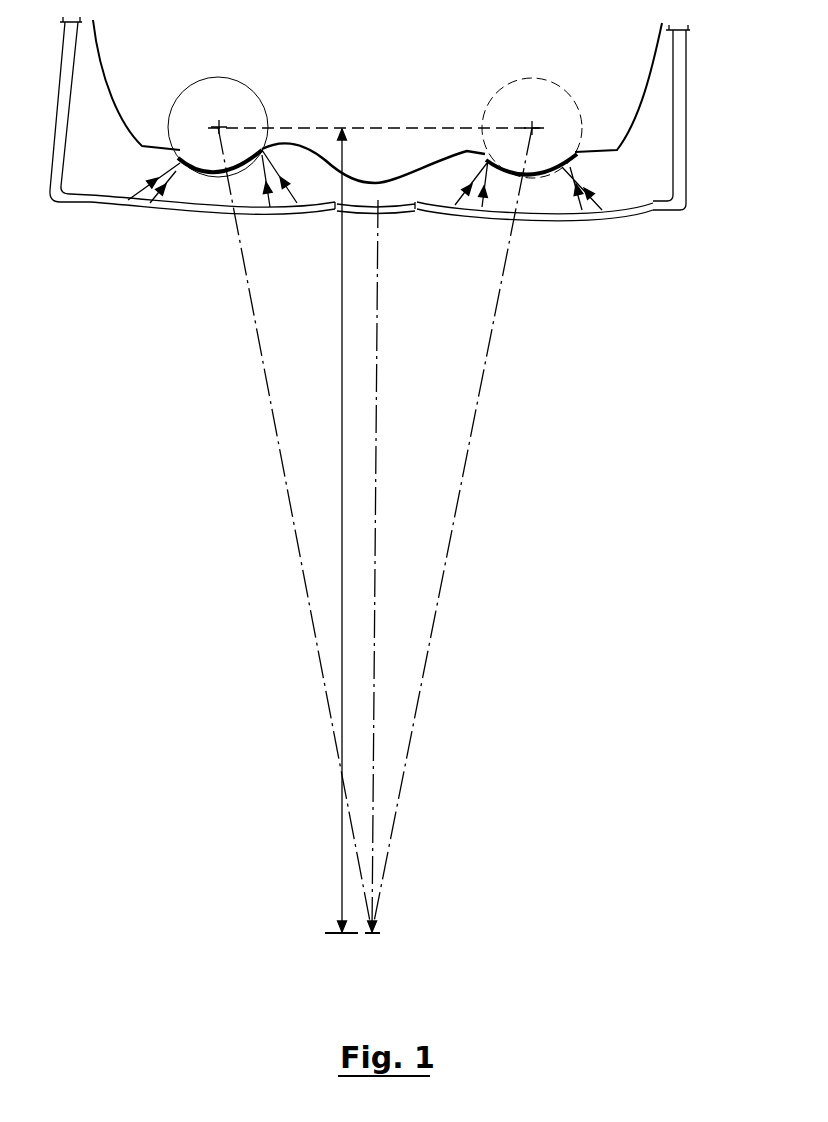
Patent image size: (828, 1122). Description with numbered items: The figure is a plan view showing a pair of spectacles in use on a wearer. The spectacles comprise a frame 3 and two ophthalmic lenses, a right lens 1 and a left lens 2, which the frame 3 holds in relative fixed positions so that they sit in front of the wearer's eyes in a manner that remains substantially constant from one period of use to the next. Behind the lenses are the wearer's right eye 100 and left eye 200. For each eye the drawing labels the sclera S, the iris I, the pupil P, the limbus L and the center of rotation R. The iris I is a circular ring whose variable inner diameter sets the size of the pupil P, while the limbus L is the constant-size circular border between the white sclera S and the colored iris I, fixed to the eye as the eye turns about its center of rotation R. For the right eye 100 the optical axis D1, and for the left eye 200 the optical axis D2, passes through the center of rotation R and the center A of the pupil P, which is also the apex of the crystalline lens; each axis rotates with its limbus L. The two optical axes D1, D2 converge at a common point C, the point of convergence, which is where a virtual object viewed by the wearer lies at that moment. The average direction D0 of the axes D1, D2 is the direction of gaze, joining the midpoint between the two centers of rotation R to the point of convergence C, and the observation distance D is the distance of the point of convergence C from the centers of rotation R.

The right ophthalmic lens 1 is at (108, 206).
The left ophthalmic lens 2 is at (643, 213).
The frame 3 is at (60, 122).
The right eye 100 is at (115, 40).
The left eye 200 is at (463, 40).
The limbus L is at (177, 161).
The sclera S is at (187, 160).
The iris I is at (203, 160).
The pupil P is at (232, 157).
The center of rotation of the eye R is at (220, 124).
The center of the pupil A is at (225, 175).
The observation distance D is at (343, 423).
The direction of gaze D0 is at (378, 532).
The optical axis of the right eye D1 is at (287, 505).
The optical axis of the left eye D2 is at (452, 538).
The point of convergence C is at (369, 920).